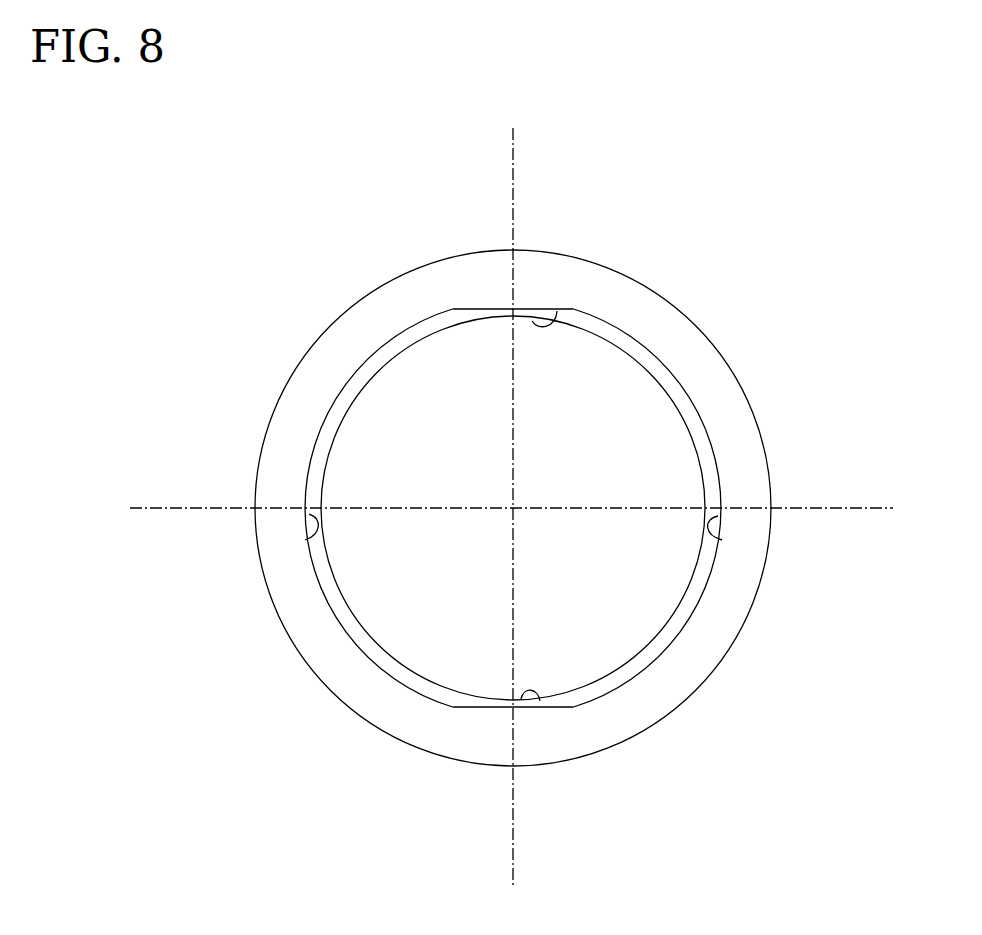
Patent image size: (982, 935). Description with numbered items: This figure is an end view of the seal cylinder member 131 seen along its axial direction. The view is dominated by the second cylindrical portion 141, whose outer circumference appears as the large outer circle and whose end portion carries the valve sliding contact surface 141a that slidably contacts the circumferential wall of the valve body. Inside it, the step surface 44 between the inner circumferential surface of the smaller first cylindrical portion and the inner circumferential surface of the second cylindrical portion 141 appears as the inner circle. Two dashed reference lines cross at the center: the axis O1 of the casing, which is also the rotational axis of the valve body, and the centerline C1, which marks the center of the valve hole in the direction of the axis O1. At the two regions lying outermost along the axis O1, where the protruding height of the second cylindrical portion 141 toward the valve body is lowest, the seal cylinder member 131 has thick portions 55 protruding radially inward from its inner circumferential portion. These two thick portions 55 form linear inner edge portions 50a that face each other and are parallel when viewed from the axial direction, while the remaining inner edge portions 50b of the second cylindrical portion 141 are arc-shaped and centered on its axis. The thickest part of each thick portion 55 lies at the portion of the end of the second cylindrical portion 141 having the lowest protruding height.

The seal cylinder member 131 is at (636, 269).
The second cylindrical portion 141 is at (740, 383).
The valve sliding contact surface 141a is at (690, 663).
The step surface 44 is at (620, 343).
The thick portion 55 is at (495, 288).
The linear inner edge portion 50a is at (557, 311).
The inner edge portion 50b is at (722, 540).
The centerline C1 is at (855, 510).
The axis O1 is at (515, 850).